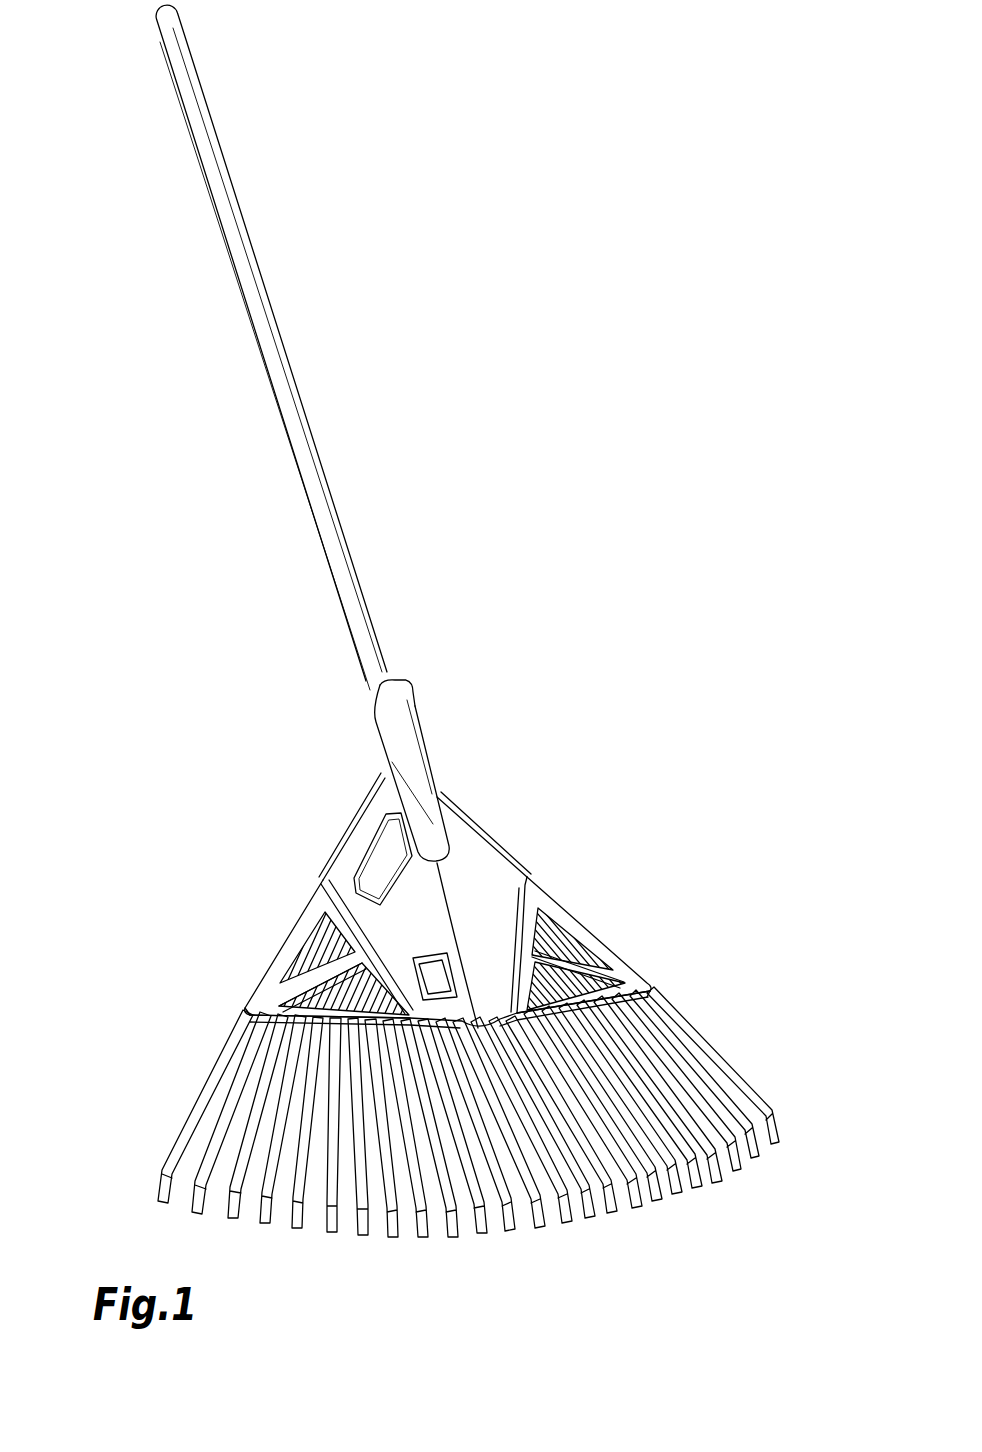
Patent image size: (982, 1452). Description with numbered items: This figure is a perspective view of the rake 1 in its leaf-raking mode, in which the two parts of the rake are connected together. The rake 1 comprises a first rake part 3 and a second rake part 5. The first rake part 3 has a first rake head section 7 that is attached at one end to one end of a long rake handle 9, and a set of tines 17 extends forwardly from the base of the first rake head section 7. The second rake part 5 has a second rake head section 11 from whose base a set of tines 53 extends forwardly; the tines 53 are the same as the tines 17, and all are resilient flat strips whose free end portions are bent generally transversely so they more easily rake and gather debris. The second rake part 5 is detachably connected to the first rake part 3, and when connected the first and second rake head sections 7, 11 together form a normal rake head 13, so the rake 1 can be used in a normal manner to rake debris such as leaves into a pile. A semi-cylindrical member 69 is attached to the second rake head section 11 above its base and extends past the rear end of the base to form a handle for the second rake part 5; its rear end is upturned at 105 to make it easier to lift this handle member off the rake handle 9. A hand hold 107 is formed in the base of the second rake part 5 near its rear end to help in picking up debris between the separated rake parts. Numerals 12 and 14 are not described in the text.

The rake 1 is at (493, 781).
The first rake part 3 is at (605, 937).
The second rake part 5 is at (257, 966).
The first rake head section 7 is at (522, 875).
The rake handle 9 is at (221, 176).
The second rake head section 11 is at (320, 828).
The tine groups 12 is at (237, 1003).
The rake head 13 is at (517, 1246).
The outer tine groups 14 is at (252, 981).
The tines 17 is at (778, 1099).
The tines 53 is at (183, 1134).
The semi-cylindrical member 69 is at (421, 730).
The upturned rear end of handle member 105 is at (400, 679).
The hand hold 107 is at (377, 843).